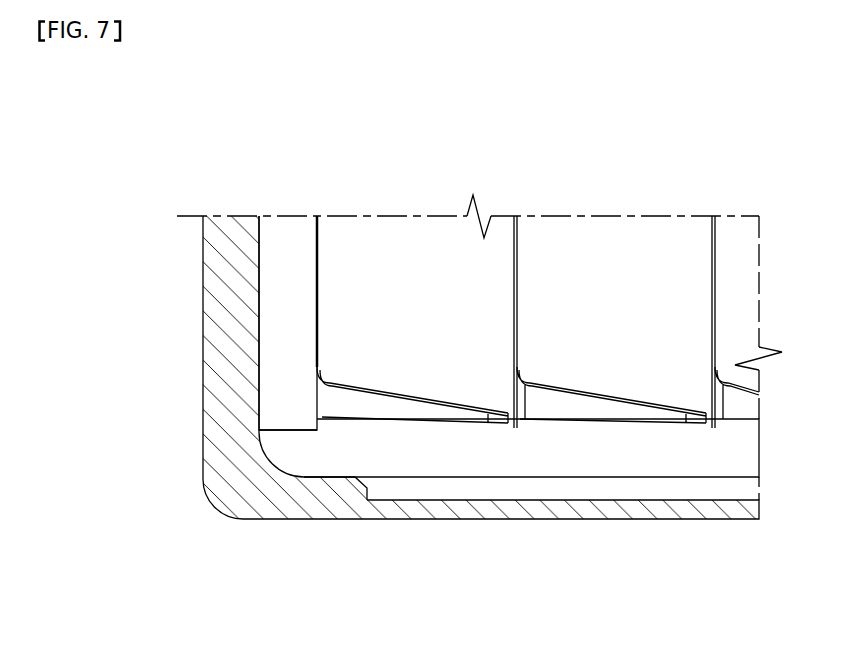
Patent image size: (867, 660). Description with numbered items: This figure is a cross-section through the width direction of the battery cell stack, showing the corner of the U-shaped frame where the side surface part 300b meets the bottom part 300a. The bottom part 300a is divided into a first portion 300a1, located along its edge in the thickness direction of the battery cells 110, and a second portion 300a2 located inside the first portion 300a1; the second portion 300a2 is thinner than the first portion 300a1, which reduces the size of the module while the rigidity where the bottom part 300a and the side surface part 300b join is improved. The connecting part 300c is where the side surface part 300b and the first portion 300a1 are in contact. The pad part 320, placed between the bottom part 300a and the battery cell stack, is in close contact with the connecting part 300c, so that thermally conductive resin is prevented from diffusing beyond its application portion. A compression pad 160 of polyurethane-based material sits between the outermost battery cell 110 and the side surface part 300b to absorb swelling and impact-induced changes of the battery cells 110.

The battery cell 110 is at (585, 268).
The compression pad 160 is at (270, 358).
The bottom part 300a is at (501, 561).
The first portion 300a1 is at (391, 490).
The second portion 300a2 is at (563, 552).
The side surface part 300b is at (228, 308).
The connecting part 300c is at (242, 470).
The pad part 320 is at (570, 468).